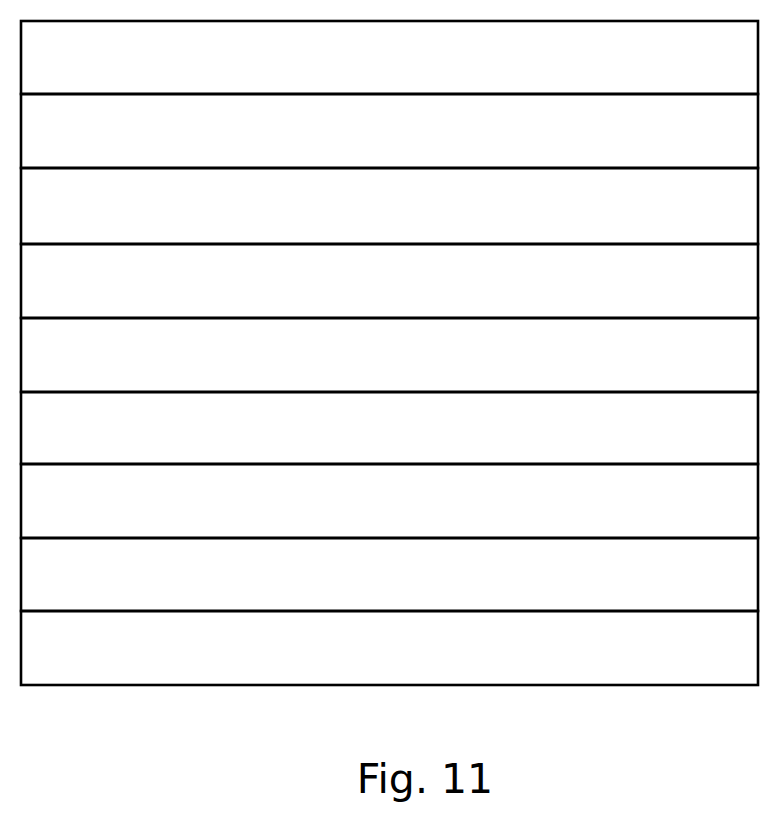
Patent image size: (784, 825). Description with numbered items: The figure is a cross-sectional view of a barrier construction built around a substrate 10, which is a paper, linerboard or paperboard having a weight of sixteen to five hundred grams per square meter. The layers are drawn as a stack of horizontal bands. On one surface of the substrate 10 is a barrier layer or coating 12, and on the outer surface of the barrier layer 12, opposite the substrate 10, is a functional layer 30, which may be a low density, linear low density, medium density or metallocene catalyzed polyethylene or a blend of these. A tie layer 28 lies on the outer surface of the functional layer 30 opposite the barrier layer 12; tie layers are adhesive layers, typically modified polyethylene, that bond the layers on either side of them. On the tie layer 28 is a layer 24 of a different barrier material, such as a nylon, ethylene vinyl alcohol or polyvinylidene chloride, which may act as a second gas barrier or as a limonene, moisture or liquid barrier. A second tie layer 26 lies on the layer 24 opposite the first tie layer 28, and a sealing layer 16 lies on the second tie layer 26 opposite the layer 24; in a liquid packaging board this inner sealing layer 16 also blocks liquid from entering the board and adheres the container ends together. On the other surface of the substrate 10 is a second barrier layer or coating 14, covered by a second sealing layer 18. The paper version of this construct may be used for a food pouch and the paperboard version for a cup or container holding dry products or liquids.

The second sealing layer 18 is at (389, 57).
The second barrier layer or coating 14 is at (389, 131).
The substrate 10 is at (389, 206).
The barrier layer or coating 12 is at (389, 281).
The functional layer 30 is at (389, 355).
The tie layer 28 is at (389, 428).
The layer of different barrier material 24 is at (389, 501).
The second tie layer 26 is at (389, 574).
The sealing layer 16 is at (389, 648).